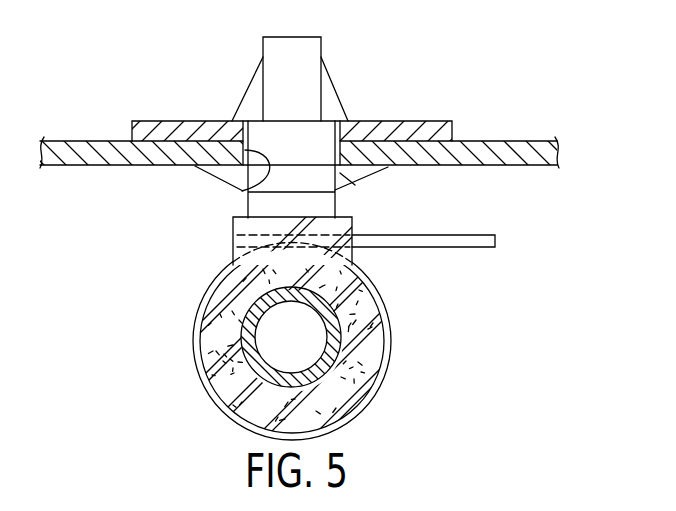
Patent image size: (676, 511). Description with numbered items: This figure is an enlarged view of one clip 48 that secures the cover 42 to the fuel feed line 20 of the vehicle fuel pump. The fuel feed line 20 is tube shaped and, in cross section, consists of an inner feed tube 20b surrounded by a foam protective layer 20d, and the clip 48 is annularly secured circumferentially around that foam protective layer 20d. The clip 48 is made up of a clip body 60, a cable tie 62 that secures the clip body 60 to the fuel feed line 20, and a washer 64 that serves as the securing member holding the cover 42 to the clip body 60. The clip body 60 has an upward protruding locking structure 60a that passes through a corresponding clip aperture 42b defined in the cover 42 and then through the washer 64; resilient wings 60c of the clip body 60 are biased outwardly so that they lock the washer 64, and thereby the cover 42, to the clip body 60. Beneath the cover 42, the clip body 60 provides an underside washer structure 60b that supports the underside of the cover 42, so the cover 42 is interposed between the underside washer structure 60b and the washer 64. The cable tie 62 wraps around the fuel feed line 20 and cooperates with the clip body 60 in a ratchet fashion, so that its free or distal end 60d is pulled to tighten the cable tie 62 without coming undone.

The fuel feed line 20 is at (228, 402).
The feed tube 20b is at (335, 290).
The foam protective layer 20d is at (360, 401).
The cover 42 is at (113, 167).
The clip aperture 42b is at (243, 191).
The clip 48 is at (143, 227).
The clip body 60 is at (313, 205).
The upward protruding locking structure 60a is at (288, 60).
The underside washer structure 60b is at (352, 183).
The resilient wings 60c is at (332, 105).
The free or distal end 60d is at (495, 241).
The cable tie 62 is at (388, 378).
The washer 64 is at (393, 120).